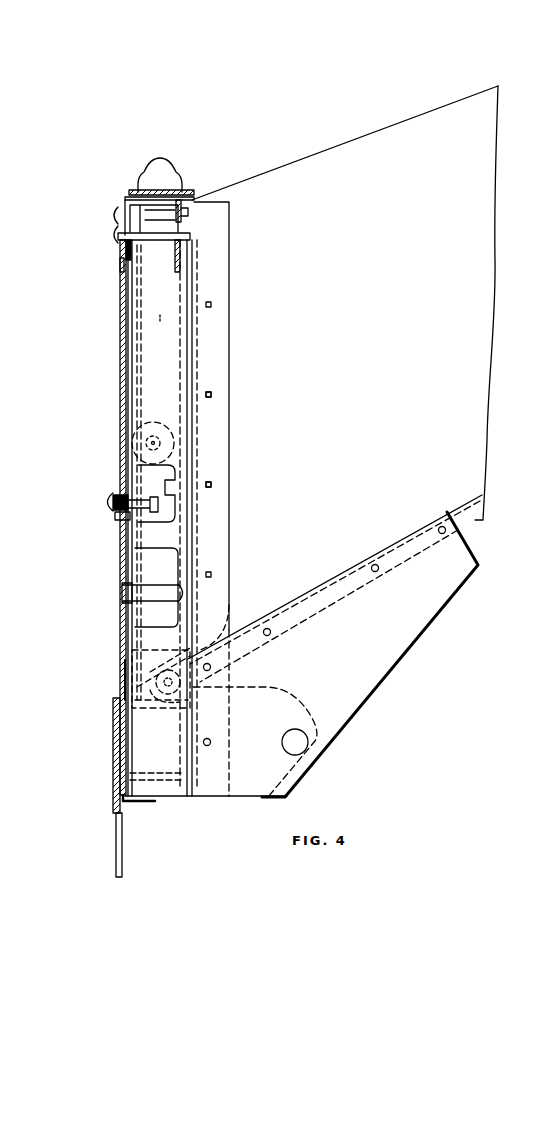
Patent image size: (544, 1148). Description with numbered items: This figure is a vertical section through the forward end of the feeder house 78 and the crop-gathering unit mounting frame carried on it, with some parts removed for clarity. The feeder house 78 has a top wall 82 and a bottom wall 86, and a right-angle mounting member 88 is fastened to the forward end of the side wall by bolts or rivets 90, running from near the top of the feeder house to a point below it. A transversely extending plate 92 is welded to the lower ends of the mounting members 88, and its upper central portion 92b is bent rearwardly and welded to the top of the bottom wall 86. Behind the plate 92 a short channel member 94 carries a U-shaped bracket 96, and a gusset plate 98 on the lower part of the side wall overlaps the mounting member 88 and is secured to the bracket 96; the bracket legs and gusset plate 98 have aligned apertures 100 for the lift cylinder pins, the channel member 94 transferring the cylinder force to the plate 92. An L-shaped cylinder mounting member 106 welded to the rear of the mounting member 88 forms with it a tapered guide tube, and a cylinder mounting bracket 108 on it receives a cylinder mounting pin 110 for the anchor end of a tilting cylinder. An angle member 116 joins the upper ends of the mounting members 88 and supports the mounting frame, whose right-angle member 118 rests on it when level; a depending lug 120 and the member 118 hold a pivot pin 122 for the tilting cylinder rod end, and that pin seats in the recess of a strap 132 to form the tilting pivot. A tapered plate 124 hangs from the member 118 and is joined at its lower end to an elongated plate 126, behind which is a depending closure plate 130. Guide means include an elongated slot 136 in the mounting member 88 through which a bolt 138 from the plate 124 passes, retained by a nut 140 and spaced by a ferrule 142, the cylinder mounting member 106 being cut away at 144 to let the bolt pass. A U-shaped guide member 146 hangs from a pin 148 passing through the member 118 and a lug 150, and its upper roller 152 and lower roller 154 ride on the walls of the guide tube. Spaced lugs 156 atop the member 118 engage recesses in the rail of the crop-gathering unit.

The feeder house 78 is at (470, 522).
The top wall 82 is at (355, 143).
The bottom wall 86 is at (466, 503).
The right-angle mounting member 88 is at (210, 346).
The bolts or rivets 90 is at (210, 483).
The transversely extending plate 92 is at (113, 728).
The upper central portion 92b is at (230, 624).
The short channel member 94 is at (178, 770).
The U-shaped bracket 96 is at (283, 708).
The gusset plate 98 is at (404, 660).
The apertures 100 is at (283, 740).
The cylinder mounting member 106 is at (180, 295).
The cylinder mounting bracket 108 is at (170, 572).
The cylinder mounting pin 110 is at (145, 597).
The angle member 116 is at (122, 262).
The right-angle member 118 is at (122, 192).
The depending lug 120 is at (180, 262).
The pivot pin 122 is at (118, 240).
The plate 124 is at (125, 678).
The elongated transversely extending plate 126 is at (113, 784).
The closure plate 130 is at (118, 848).
The strap 132 is at (125, 250).
The elongated slot 136 is at (133, 372).
The bolt 138 is at (110, 500).
The nut 140 is at (138, 522).
The ferrule 142 is at (115, 512).
The cut-away portion 144 is at (165, 478).
The U-shaped guide member 146 is at (167, 319).
The pin 148 is at (118, 215).
The lug 150 is at (181, 226).
The upper roller 152 is at (160, 422).
The lower roller 154 is at (125, 648).
The lug 156 is at (172, 178).